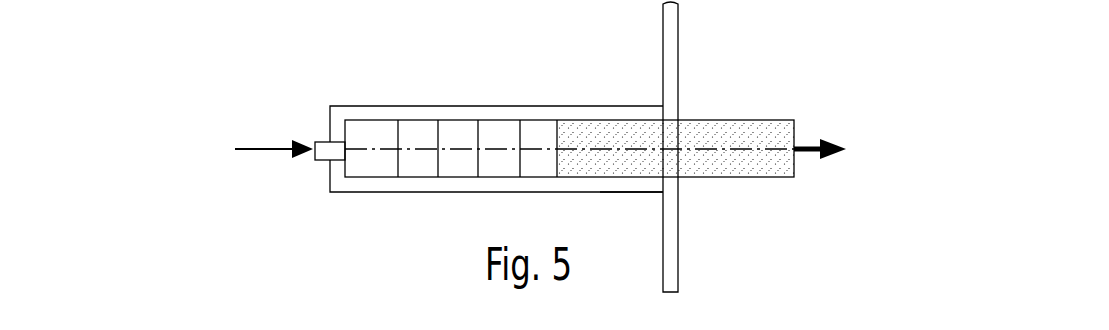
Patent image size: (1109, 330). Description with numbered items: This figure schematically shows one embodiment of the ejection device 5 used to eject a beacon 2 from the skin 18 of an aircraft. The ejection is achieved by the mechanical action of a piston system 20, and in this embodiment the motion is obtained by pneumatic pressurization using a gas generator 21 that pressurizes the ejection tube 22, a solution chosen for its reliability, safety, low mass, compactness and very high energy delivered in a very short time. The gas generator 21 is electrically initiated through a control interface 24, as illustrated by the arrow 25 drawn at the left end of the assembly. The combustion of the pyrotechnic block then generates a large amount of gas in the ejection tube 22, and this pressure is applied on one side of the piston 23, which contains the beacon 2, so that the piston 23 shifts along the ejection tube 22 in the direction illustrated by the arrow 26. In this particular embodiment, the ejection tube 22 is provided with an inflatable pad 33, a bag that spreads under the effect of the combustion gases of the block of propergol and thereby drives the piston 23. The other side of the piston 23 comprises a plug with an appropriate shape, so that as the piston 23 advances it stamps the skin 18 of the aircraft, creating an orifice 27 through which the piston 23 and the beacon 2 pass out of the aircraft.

The beacon 2 is at (740, 117).
The ejection device 5 is at (397, 72).
The skin 18 is at (670, 60).
The piston system 20 is at (479, 96).
The gas generator 21 is at (368, 131).
The ejection tube 22 is at (580, 98).
The piston 23 is at (628, 178).
The control interface 24 is at (318, 162).
The arrow 25 is at (252, 152).
The arrow 26 is at (818, 155).
The orifice 27 is at (689, 185).
The inflatable pad 33 is at (507, 134).